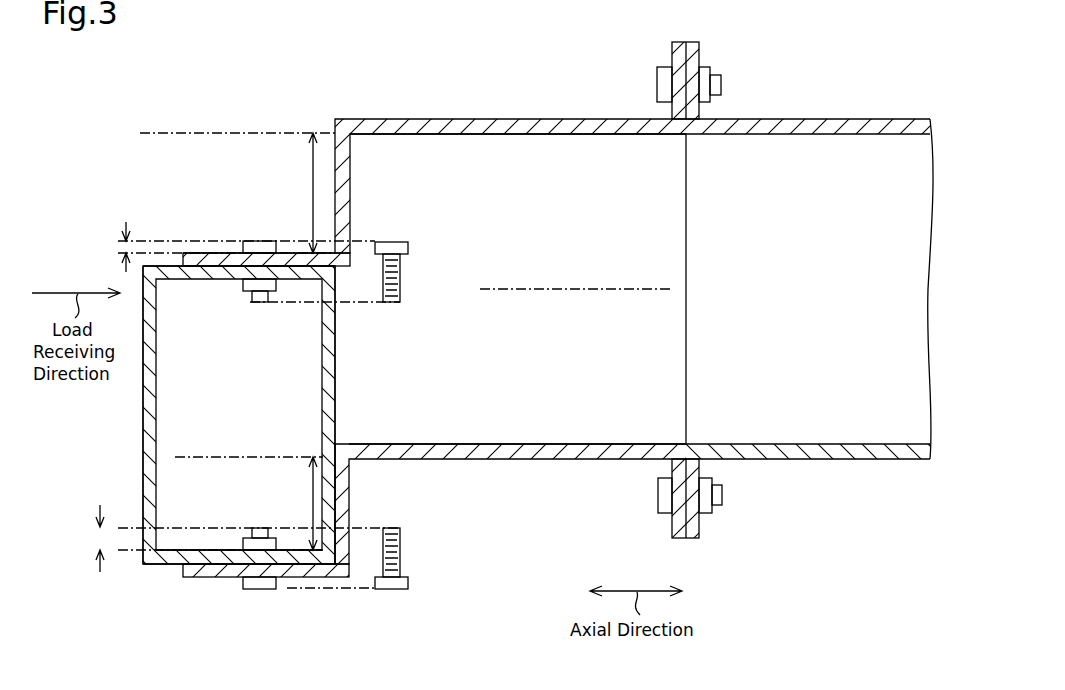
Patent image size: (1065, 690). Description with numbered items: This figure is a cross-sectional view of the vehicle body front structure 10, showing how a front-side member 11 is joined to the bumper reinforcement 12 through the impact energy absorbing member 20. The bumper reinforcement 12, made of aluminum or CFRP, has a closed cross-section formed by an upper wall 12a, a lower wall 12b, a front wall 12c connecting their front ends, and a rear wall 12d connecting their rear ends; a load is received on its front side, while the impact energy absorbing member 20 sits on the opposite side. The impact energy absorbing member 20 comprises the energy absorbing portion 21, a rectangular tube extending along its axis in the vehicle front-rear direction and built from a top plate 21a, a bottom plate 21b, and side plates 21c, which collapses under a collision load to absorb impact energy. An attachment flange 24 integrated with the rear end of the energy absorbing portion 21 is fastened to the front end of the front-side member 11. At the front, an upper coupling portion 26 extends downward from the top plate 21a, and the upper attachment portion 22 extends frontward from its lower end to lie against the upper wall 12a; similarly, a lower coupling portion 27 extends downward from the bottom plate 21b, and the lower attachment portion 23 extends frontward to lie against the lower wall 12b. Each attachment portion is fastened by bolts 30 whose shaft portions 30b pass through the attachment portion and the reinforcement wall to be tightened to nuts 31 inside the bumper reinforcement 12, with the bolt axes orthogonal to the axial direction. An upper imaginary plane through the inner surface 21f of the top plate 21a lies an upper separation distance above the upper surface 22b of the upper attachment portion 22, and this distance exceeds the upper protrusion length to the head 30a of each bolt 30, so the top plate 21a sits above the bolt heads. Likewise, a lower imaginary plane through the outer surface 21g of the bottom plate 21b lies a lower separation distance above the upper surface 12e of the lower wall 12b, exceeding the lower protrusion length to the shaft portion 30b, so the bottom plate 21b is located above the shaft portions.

The vehicle body front structure 10 is at (122, 121).
The front-side member 11 is at (805, 119).
The bumper reinforcement 12 is at (241, 415).
The upper wall 12a is at (165, 265).
The lower wall 12b is at (165, 565).
The front wall 12c is at (143, 452).
The rear wall 12d is at (336, 378).
The upper surface of the lower wall 12e is at (207, 550).
The impact energy absorbing member 20 is at (632, 313).
The energy absorbing portion 21 is at (550, 293).
The top plate 21a is at (472, 119).
The bottom plate 21b is at (572, 459).
The side plate 21c is at (672, 308).
The inner surface of the top plate 21f is at (535, 134).
The outer surface of the bottom plate 21g is at (486, 459).
The upper attachment portion 22 is at (261, 249).
The upper surface of the upper attachment portion 22b is at (200, 252).
The lower attachment portion 23 is at (208, 578).
The attachment flange 24 is at (672, 44).
The upper coupling portion 26 is at (350, 178).
The lower coupling portion 27 is at (349, 490).
The bolt 30 is at (354, 419).
The head 30a is at (264, 241).
The shaft portion 30b is at (256, 302).
The nut 31 is at (276, 287).